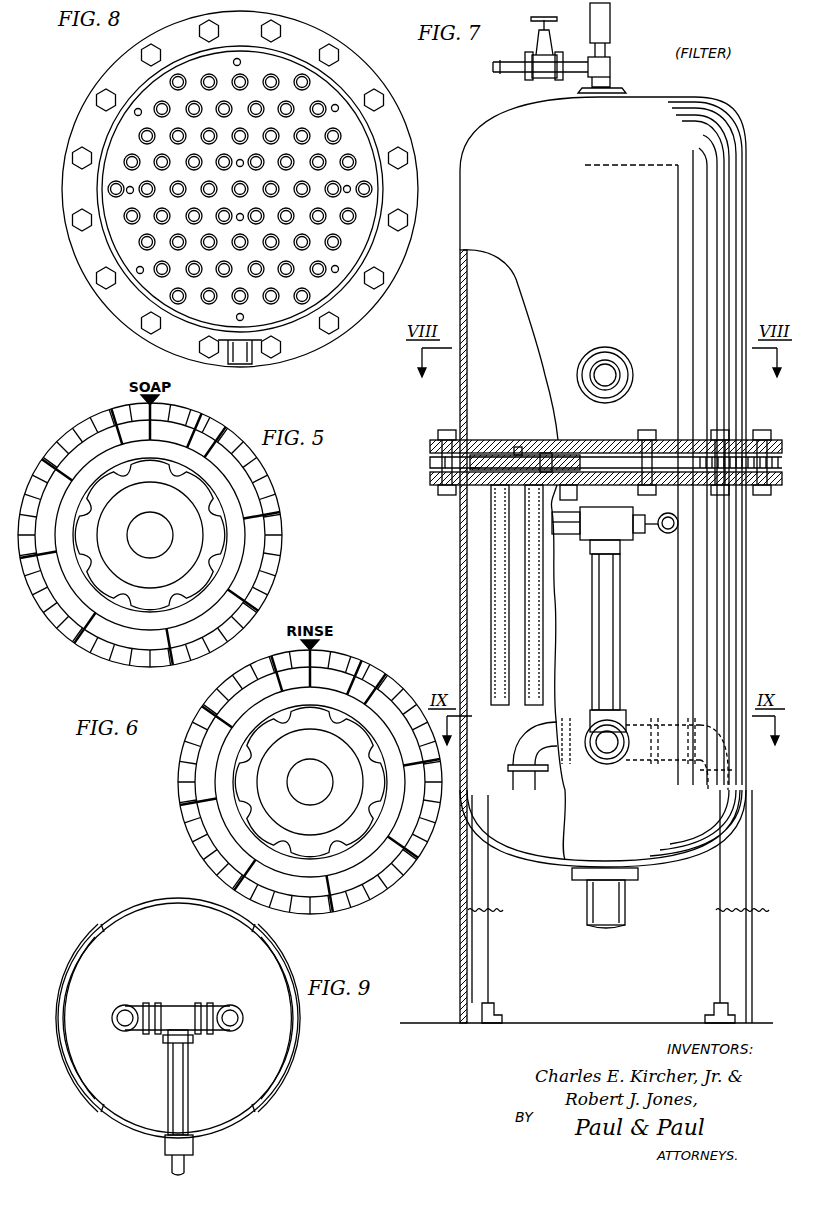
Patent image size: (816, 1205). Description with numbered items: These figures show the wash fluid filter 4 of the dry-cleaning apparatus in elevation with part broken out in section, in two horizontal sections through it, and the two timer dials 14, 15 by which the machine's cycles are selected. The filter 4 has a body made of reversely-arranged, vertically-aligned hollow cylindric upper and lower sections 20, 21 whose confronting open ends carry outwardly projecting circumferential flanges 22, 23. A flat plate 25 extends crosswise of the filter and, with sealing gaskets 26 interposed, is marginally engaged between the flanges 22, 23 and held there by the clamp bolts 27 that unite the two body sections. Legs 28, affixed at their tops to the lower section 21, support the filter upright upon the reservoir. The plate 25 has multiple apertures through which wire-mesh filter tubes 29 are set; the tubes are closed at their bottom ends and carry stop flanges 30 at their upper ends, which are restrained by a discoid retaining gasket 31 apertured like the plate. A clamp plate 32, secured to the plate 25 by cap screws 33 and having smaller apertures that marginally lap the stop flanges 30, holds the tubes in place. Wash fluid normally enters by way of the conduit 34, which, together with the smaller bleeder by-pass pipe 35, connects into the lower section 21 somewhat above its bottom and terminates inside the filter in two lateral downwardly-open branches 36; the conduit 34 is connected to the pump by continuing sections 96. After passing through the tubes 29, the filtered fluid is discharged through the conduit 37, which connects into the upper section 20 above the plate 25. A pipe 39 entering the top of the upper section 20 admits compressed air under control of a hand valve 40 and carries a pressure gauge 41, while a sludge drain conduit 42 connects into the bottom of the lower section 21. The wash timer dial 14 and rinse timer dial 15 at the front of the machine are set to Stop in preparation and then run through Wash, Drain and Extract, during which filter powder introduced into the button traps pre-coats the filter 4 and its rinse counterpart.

In FIG. 8, the wash fluid filter 4 is at (58, 155).
In FIG. 9, the wash fluid filter 4 is at (132, 902).
In FIG. 7, the wash fluid filter 4 is at (642, 82).
In FIG. 5, the wash timer dial 14 is at (290, 505).
In FIG. 6, the rinse timer dial 15 is at (178, 755).
In FIG. 8, the upper section 20 is at (100, 188).
In FIG. 7, the upper section 20 is at (603, 443).
In FIG. 9, the lower section 21 is at (170, 898).
In FIG. 7, the lower section 21 is at (722, 572).
In FIG. 8, the circumferential flange 22 is at (70, 210).
In FIG. 7, the circumferential flange 22 is at (607, 444).
In FIG. 7, the circumferential flange 23 is at (612, 478).
In FIG. 7, the flat plate 25 is at (430, 462).
In FIG. 7, the sealing gaskets 26 is at (436, 446).
In FIG. 8, the clamp bolts 27 is at (147, 325).
In FIG. 7, the clamp bolts 27 is at (447, 430).
In FIG. 9, the legs 28 is at (58, 1018).
In FIG. 7, the legs 28 is at (497, 897).
In FIG. 8, the filter tubes 29 is at (158, 218).
In FIG. 7, the filter tubes 29 is at (535, 550).
In FIG. 7, the stop flanges 30 is at (546, 453).
In FIG. 7, the discoid retaining gasket 31 is at (478, 472).
In FIG. 8, the clamp plate 32 is at (150, 95).
In FIG. 7, the clamp plate 32 is at (480, 452).
In FIG. 8, the cap screws 33 is at (237, 58).
In FIG. 7, the cap screws 33 is at (517, 446).
In FIG. 9, the conduit 34 is at (188, 1162).
In FIG. 7, the conduit 34 is at (621, 622).
In FIG. 7, the bleeder by-pass pipe 35 is at (661, 534).
In FIG. 9, the lateral downwardly-open branches 36 is at (125, 1033).
In FIG. 7, the lateral downwardly-open branches 36 is at (525, 792).
In FIG. 8, the conduit 37 is at (240, 366).
In FIG. 7, the conduit 37 is at (605, 360).
In FIG. 7, the pipe 39 is at (512, 72).
In FIG. 7, the hand valve 40 is at (549, 44).
In FIG. 7, the pressure gauge 41 is at (612, 31).
In FIG. 7, the sludge drain conduit 42 is at (607, 926).
In FIG. 7, the continuing sections 96 is at (566, 537).